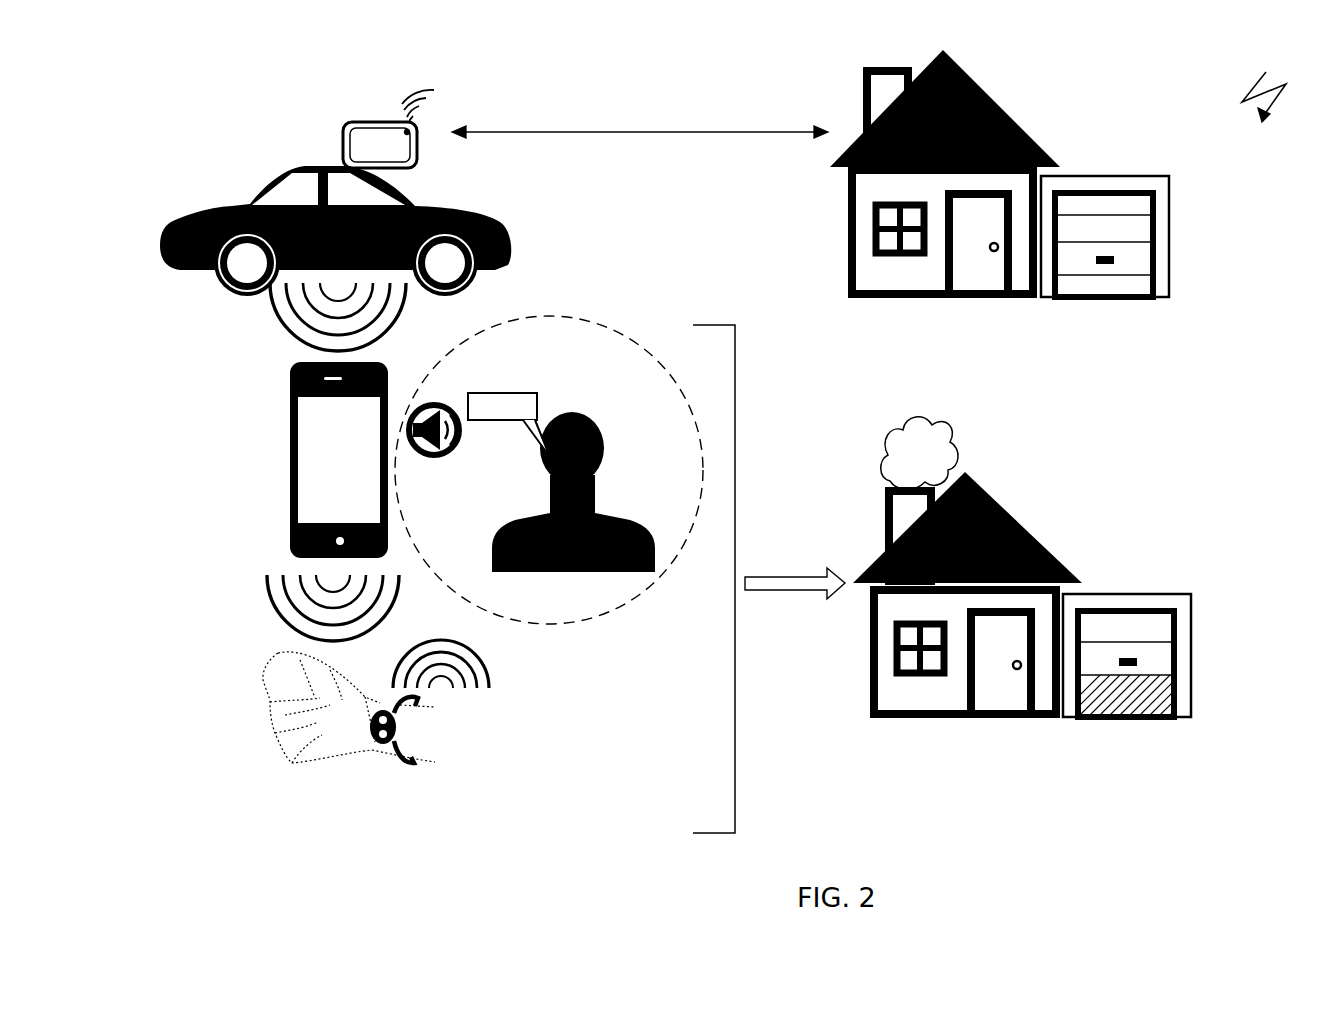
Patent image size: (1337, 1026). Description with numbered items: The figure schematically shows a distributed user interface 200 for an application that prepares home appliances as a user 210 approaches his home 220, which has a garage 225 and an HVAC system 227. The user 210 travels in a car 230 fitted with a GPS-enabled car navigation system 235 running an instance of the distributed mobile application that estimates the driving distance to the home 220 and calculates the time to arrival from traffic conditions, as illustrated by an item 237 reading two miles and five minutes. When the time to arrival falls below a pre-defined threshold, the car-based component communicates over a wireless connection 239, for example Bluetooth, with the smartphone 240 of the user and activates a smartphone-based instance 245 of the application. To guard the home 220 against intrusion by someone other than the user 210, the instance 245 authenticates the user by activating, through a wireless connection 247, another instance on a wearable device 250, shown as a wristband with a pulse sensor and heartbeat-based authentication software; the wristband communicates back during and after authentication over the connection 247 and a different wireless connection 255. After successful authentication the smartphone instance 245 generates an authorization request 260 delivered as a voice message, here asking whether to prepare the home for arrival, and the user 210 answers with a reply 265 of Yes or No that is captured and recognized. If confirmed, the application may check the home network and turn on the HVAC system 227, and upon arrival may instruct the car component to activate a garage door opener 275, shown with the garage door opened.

The system environment 200 is at (1268, 84).
The user 210 is at (613, 432).
The home 220 is at (1018, 173).
The garage 225 is at (1132, 232).
The HVAC system 227 is at (857, 115).
The car 230 is at (267, 168).
The GPS-enabled car navigation system 235 is at (343, 138).
The item 237 is at (605, 123).
The wireless connection 239 is at (272, 302).
The smartphone 240 is at (295, 459).
The smartphone-based instance 245 is at (323, 470).
The wireless connection 247 is at (260, 590).
The wearable device 250 is at (363, 738).
The wireless connection 255 is at (480, 678).
The authorization request 260 is at (428, 508).
The reply 265 is at (542, 398).
The garage door opener 275 is at (1177, 683).